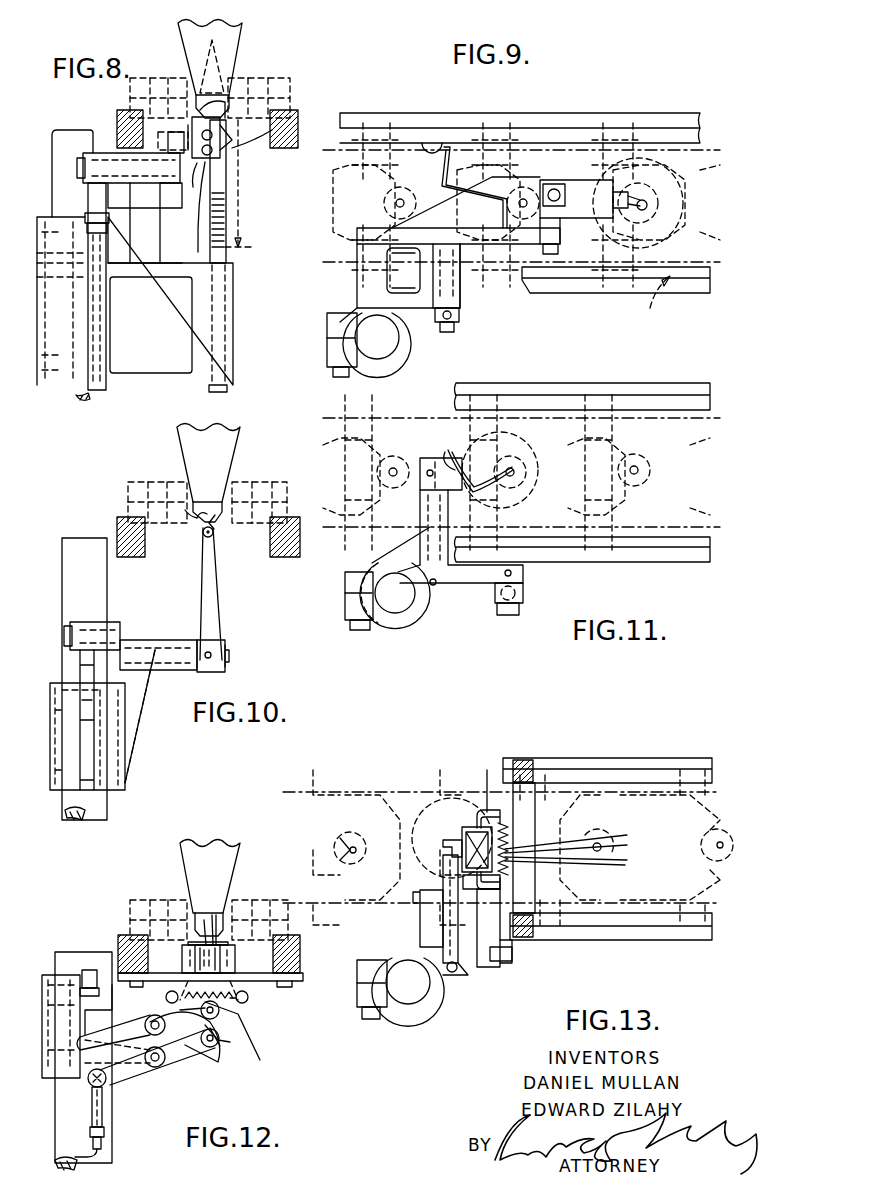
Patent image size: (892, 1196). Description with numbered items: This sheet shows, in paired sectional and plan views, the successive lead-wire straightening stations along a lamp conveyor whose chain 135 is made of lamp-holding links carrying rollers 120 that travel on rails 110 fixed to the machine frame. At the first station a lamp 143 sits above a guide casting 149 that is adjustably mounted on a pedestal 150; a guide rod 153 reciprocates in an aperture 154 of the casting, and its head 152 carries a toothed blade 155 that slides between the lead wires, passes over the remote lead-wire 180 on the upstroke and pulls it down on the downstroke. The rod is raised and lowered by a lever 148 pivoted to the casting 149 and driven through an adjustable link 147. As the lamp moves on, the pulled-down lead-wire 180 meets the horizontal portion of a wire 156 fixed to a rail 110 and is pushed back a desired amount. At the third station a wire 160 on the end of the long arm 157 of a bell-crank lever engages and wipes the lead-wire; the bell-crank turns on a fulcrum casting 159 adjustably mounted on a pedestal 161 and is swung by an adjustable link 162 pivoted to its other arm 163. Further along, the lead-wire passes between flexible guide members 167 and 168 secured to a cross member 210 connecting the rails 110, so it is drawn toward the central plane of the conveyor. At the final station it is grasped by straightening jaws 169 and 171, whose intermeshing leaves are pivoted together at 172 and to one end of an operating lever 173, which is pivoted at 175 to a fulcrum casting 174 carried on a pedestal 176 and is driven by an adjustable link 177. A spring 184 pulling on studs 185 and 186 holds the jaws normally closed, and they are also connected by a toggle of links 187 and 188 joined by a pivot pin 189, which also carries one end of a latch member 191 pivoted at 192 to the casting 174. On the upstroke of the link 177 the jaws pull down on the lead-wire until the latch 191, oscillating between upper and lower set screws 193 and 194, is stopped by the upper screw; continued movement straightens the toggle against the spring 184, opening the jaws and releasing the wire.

In FIG. 8, the rails 110 is at (117, 120).
In FIG. 9, the rails 110 is at (666, 116).
In FIG. 11, the rails 110 is at (678, 372).
In FIG. 10, the rails 110 is at (133, 557).
In FIG. 12, the rails 110 is at (300, 942).
In FIG. 13, the rails 110 is at (694, 758).
In FIG. 8, the roller 120 is at (290, 82).
In FIG. 11, the roller 120 is at (615, 565).
In FIG. 10, the roller 120 is at (132, 494).
In FIG. 12, the roller 120 is at (128, 905).
In FIG. 9, the chain 135 is at (695, 322).
In FIG. 8, the lamp 143 is at (240, 35).
In FIG. 10, the lamp 143 is at (228, 430).
In FIG. 12, the lamp 143 is at (220, 855).
In FIG. 8, the adjustable link 147 is at (103, 313).
In FIG. 9, the adjustable link 147 is at (462, 320).
In FIG. 8, the lever 148 is at (182, 228).
In FIG. 9, the lever 148 is at (462, 298).
In FIG. 8, the guide casting 149 is at (165, 356).
In FIG. 9, the guide casting 149 is at (393, 352).
In FIG. 8, the pedestal 150 is at (92, 400).
In FIG. 9, the pedestal 150 is at (380, 350).
In FIG. 8, the head 152 is at (188, 205).
In FIG. 9, the head 152 is at (570, 218).
In FIG. 8, the guide rod 153 is at (217, 390).
In FIG. 8, the aperture 154 is at (225, 338).
In FIG. 8, the toothed blade 155 is at (222, 78).
In FIG. 9, the toothed blade 155 is at (626, 196).
In FIG. 8, the wire 156 is at (240, 167).
In FIG. 9, the wire 156 is at (440, 150).
In FIG. 11, the long arm 157 is at (490, 458).
In FIG. 10, the long arm 157 is at (210, 610).
In FIG. 11, the fulcrum casting 159 is at (401, 632).
In FIG. 10, the fulcrum casting 159 is at (140, 735).
In FIG. 11, the wire 160 is at (452, 448).
In FIG. 10, the wire 160 is at (195, 524).
In FIG. 11, the pedestal 161 is at (397, 610).
In FIG. 10, the pedestal 161 is at (76, 591).
In FIG. 11, the adjustable link 162 is at (526, 597).
In FIG. 11, the arm 163 is at (468, 585).
In FIG. 12, the flexible guide member 167 is at (218, 925).
In FIG. 13, the flexible guide member 167 is at (632, 812).
In FIG. 12, the flexible guide member 168 is at (198, 934).
In FIG. 13, the flexible guide member 168 is at (615, 865).
In FIG. 12, the final straightening jaw 169 is at (184, 955).
In FIG. 13, the final straightening jaw 169 is at (443, 872).
In FIG. 12, the final straightening jaw 171 is at (235, 962).
In FIG. 13, the final straightening jaw 171 is at (465, 827).
In FIG. 12, the pivot 172 is at (212, 1047).
In FIG. 12, the operating lever 173 is at (180, 1060).
In FIG. 12, the fulcrum casting 174 is at (108, 930).
In FIG. 13, the fulcrum casting 174 is at (445, 998).
In FIG. 12, the pivot 175 is at (160, 1068).
In FIG. 12, the pedestal 176 is at (90, 1153).
In FIG. 13, the pedestal 176 is at (405, 995).
In FIG. 12, the adjustable link 177 is at (103, 1107).
In FIG. 9, the lead-wire 180 is at (645, 214).
In FIG. 10, the lead-wire 180 is at (217, 523).
In FIG. 13, the lead-wire 180 is at (340, 848).
In FIG. 12, the spring 184 is at (255, 992).
In FIG. 13, the spring 184 is at (507, 814).
In FIG. 12, the stud 185 is at (185, 998).
In FIG. 13, the stud 185 is at (500, 888).
In FIG. 12, the stud 186 is at (237, 1003).
In FIG. 13, the stud 186 is at (488, 779).
In FIG. 12, the toggle link 187 is at (187, 1021).
In FIG. 12, the toggle link 188 is at (240, 1030).
In FIG. 12, the pivot pin 189 is at (215, 1028).
In FIG. 12, the latch member 191 is at (128, 1026).
In FIG. 12, the pivot 192 is at (157, 1025).
In FIG. 12, the upper set screw 193 is at (82, 1005).
In FIG. 12, the lower set screw 194 is at (95, 1053).
In FIG. 12, the cross member 210 is at (300, 988).
In FIG. 13, the cross member 210 is at (535, 915).